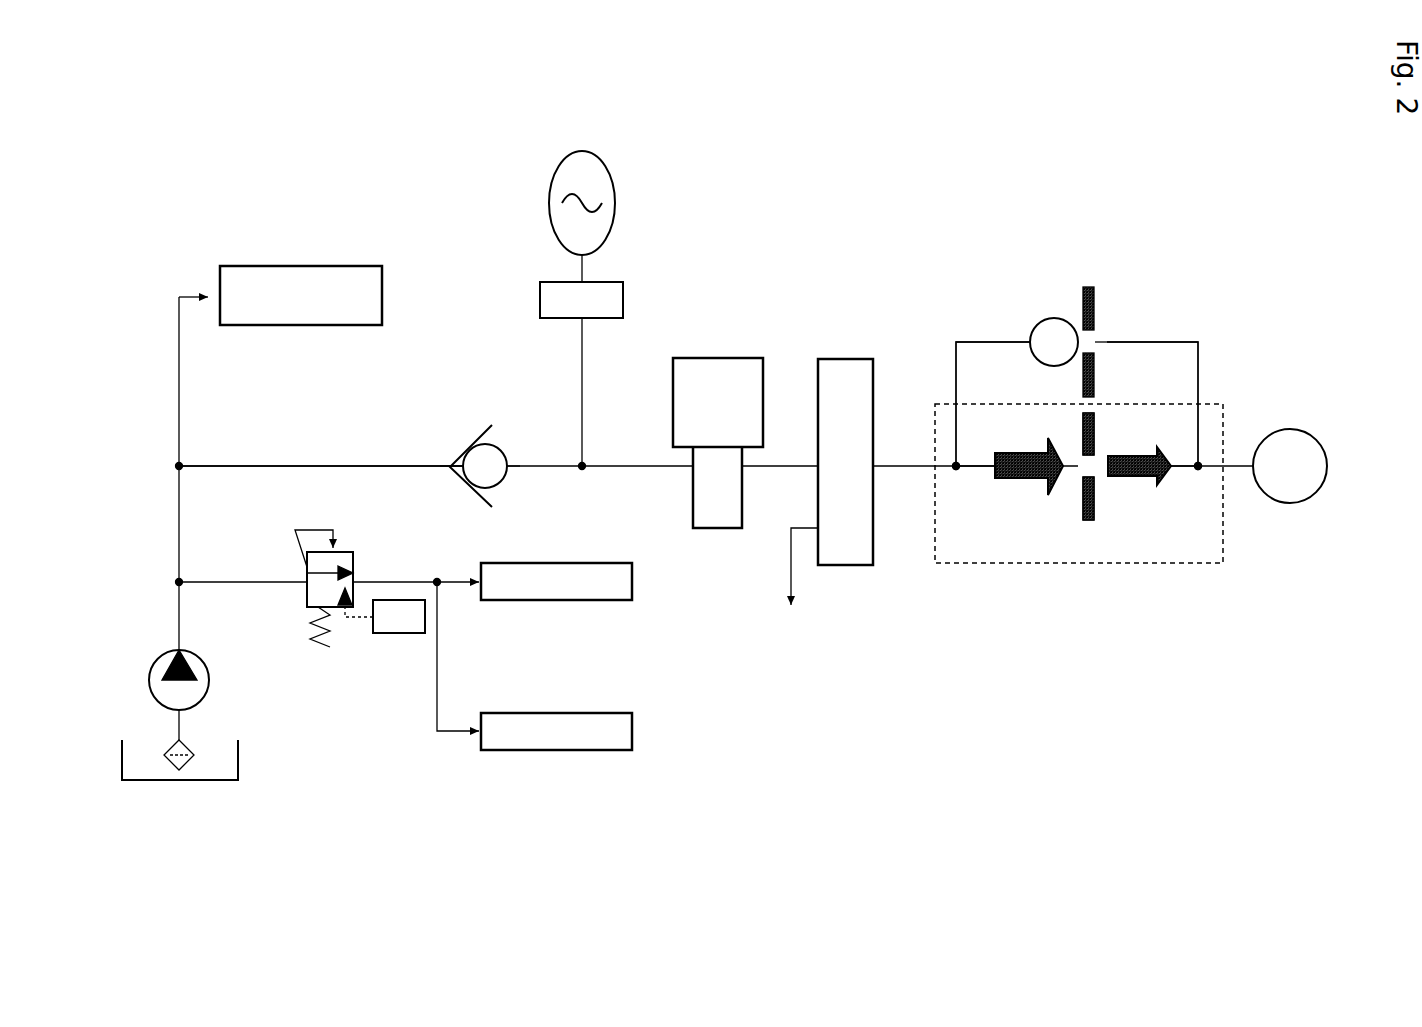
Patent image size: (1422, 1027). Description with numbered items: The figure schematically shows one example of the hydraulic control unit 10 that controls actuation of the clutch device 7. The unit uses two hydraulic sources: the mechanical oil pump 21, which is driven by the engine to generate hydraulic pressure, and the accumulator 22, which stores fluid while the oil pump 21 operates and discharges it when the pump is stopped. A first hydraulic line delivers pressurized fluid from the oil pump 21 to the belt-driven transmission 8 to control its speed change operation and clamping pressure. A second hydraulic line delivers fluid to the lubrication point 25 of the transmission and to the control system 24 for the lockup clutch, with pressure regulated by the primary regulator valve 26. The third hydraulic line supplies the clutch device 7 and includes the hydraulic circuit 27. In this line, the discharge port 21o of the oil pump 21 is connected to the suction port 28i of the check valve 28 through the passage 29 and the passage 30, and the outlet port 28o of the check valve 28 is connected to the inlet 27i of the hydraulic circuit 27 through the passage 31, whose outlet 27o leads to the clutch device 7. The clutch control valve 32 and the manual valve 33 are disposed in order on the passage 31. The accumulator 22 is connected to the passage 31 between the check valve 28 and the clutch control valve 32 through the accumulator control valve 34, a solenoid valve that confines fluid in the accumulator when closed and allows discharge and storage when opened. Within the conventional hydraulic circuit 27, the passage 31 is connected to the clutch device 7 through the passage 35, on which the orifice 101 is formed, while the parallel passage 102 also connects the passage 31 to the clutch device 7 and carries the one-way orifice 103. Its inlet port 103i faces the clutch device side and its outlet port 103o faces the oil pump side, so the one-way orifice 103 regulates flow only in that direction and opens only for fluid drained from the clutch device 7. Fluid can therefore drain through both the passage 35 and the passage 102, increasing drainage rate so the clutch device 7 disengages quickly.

The clutch device 7 is at (1290, 503).
The belt-driven transmission 8 is at (301, 266).
The hydraulic control unit 10 is at (1009, 189).
The mechanical oil pump 21 is at (209, 692).
The discharge port 21o is at (179, 650).
The accumulator 22 is at (615, 201).
The control system 24 is at (553, 752).
The lubrication point 25 is at (557, 602).
The primary regulator valve 26 is at (305, 595).
The hydraulic circuit 27 is at (1135, 572).
The inlet 27i is at (948, 480).
The outlet 27o is at (1210, 454).
The check valve 28 is at (458, 452).
The suction port 28i is at (455, 477).
The outlet port 28o is at (510, 452).
The passage 29 is at (178, 520).
The passage 30 is at (264, 460).
The passage 31 is at (553, 470).
The clutch control valve 32 is at (718, 365).
The manual valve 33 is at (840, 362).
The accumulator control valve 34 is at (622, 302).
The passage 35 is at (976, 470).
The orifice 101 is at (1080, 505).
The passage 102 is at (993, 340).
The one-way orifice 103 is at (1086, 285).
The inlet port 103i is at (1093, 340).
The outlet port 103o is at (1030, 338).